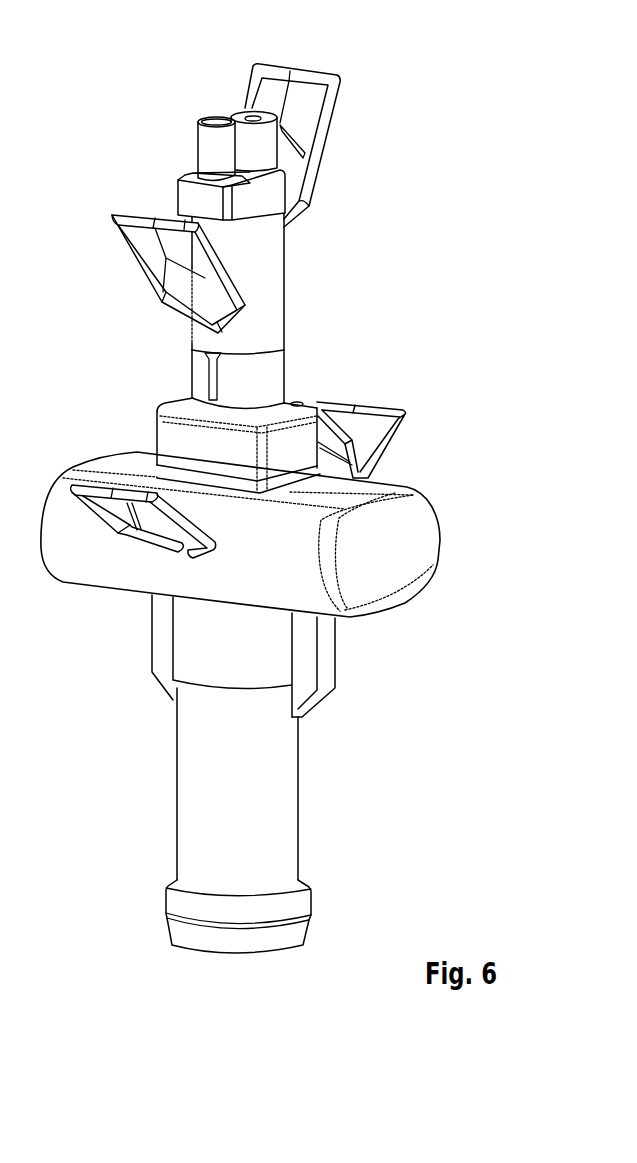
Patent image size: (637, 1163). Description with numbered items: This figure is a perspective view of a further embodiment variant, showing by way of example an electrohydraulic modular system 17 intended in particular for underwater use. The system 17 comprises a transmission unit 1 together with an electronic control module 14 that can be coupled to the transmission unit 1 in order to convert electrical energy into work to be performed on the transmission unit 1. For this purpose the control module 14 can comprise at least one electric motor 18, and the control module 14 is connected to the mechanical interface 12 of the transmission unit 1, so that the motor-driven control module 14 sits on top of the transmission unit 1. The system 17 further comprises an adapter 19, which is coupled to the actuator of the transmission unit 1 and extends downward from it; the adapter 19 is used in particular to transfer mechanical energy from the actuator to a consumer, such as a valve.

The transmission unit 1 is at (447, 491).
The mechanical interface 12 is at (270, 367).
The electronic control module 14 is at (173, 157).
The electrohydraulic modular system 17 is at (430, 125).
The electric motor 18 is at (270, 290).
The adapter 19 is at (287, 807).